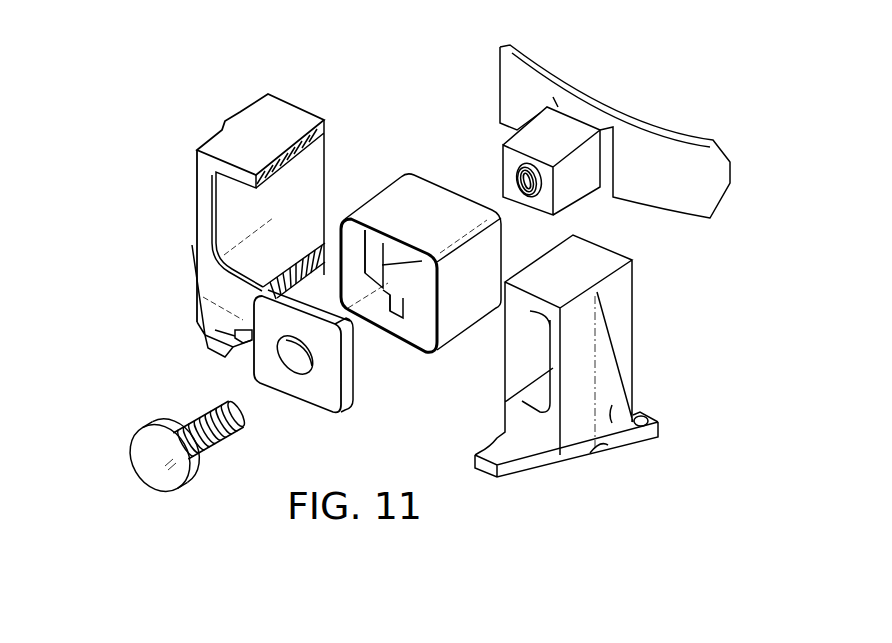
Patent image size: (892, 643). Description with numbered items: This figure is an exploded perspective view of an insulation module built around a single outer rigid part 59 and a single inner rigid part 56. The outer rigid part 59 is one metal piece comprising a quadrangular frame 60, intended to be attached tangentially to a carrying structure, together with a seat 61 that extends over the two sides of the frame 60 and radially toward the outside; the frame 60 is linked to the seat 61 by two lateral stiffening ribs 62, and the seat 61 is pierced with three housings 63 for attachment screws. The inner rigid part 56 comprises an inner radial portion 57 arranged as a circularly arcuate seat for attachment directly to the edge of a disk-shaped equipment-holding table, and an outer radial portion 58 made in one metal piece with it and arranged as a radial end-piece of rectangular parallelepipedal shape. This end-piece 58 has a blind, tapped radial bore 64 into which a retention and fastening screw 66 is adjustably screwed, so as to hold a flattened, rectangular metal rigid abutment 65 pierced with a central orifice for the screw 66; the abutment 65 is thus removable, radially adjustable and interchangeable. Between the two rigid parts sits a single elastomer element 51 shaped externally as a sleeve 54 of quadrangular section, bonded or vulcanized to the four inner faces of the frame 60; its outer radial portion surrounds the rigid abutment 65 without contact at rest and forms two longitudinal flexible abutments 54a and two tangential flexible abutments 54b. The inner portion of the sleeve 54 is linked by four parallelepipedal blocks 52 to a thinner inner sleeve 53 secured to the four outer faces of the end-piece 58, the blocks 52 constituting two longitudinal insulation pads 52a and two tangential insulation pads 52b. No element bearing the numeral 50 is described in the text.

The flange of bracket 50 is at (623, 287).
The elastomer element 51 is at (392, 163).
The parallelepipedal blocks 52 is at (404, 302).
The longitudinal insulation pads 52a is at (407, 307).
The tangential insulation pads 52b is at (373, 243).
The inner sleeve 53 is at (397, 253).
The sleeve 54 is at (453, 320).
The longitudinal flexible abutments 54a is at (382, 322).
The tangential flexible abutments 54b is at (348, 253).
The inner rigid part 56 is at (582, 148).
The inner radial portion 57 is at (647, 187).
The outer radial portion 58 is at (558, 132).
The outer rigid part 59 is at (604, 356).
The quadrangular frame 60 is at (200, 210).
The seat 61 is at (217, 322).
The lateral stiffening ribs 62 is at (195, 261).
The housings 63 is at (247, 342).
The tapped radial bore 64 is at (517, 180).
The rigid abutment 65 is at (318, 395).
The retention and fastening screw 66 is at (158, 470).